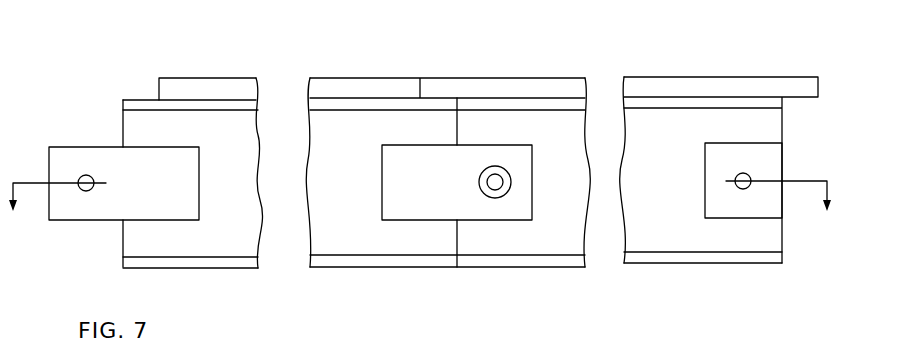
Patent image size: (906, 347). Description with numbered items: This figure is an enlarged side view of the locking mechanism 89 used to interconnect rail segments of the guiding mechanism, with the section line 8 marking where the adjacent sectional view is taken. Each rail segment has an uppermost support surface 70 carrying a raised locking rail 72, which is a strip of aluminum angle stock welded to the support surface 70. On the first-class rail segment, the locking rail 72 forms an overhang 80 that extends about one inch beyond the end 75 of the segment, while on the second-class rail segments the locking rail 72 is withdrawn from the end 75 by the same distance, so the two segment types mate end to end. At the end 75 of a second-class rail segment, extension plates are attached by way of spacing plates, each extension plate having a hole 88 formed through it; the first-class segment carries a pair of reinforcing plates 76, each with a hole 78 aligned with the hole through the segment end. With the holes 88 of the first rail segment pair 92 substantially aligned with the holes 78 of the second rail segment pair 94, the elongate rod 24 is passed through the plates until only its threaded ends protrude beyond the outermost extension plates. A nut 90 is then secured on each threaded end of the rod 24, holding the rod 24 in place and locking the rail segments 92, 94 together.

The uppermost support surface 70 is at (192, 92).
The end of the rail segment 75 is at (103, 124).
The hole 88 is at (84, 176).
The section line 8- 8 is at (419, 211).
The overhang 80 is at (438, 90).
The locking mechanism 89 is at (480, 234).
The first rail segment pair 92 is at (355, 245).
The nut 90 is at (505, 192).
The elongate rod 24 is at (496, 180).
The locking rail 72 is at (722, 83).
The second rail segment pair 94 is at (652, 232).
The reinforcing plate 76 is at (732, 207).
The hole 78 is at (743, 174).